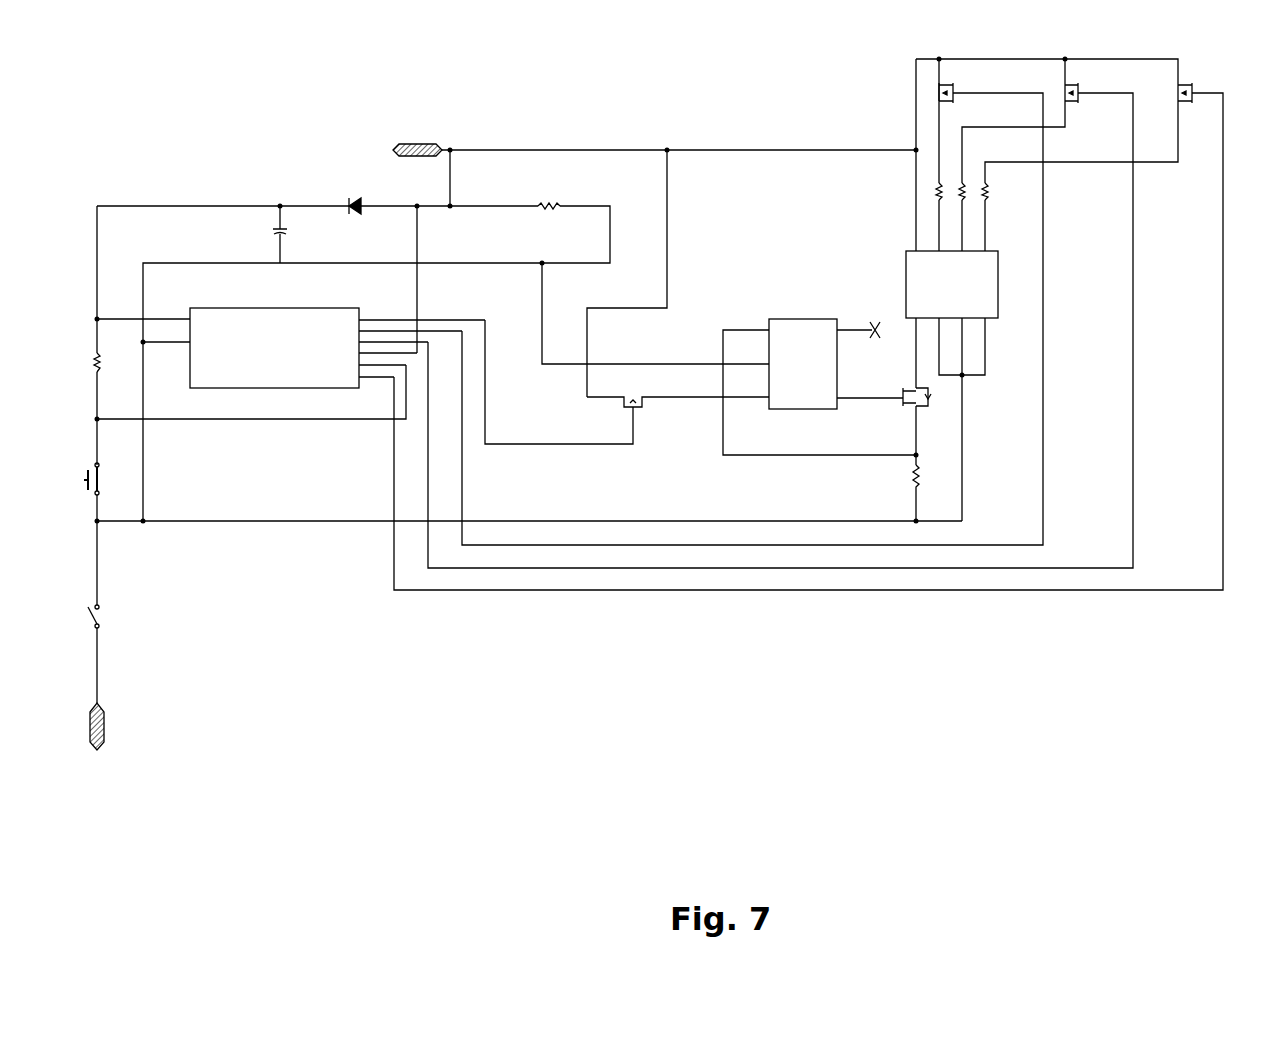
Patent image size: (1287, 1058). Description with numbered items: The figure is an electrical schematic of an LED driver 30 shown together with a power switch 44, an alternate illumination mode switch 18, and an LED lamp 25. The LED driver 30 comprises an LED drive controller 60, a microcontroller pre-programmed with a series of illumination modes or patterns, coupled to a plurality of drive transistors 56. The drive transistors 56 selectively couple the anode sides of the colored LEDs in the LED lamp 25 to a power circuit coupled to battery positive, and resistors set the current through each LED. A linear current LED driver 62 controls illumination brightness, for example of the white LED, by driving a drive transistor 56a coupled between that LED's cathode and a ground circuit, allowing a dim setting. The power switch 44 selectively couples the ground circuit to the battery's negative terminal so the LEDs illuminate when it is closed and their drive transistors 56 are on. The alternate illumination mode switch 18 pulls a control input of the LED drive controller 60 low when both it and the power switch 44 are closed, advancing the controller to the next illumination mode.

The LED driver 30 is at (336, 78).
The LED drive controller 60 is at (254, 307).
The linear current LED driver 62 is at (826, 318).
The LED lamp 25 is at (906, 252).
The drive transistors 56 is at (953, 93).
The drive transistor 56a is at (903, 401).
The alternate illumination mode switch 18 is at (99, 464).
The power switch 44 is at (99, 606).